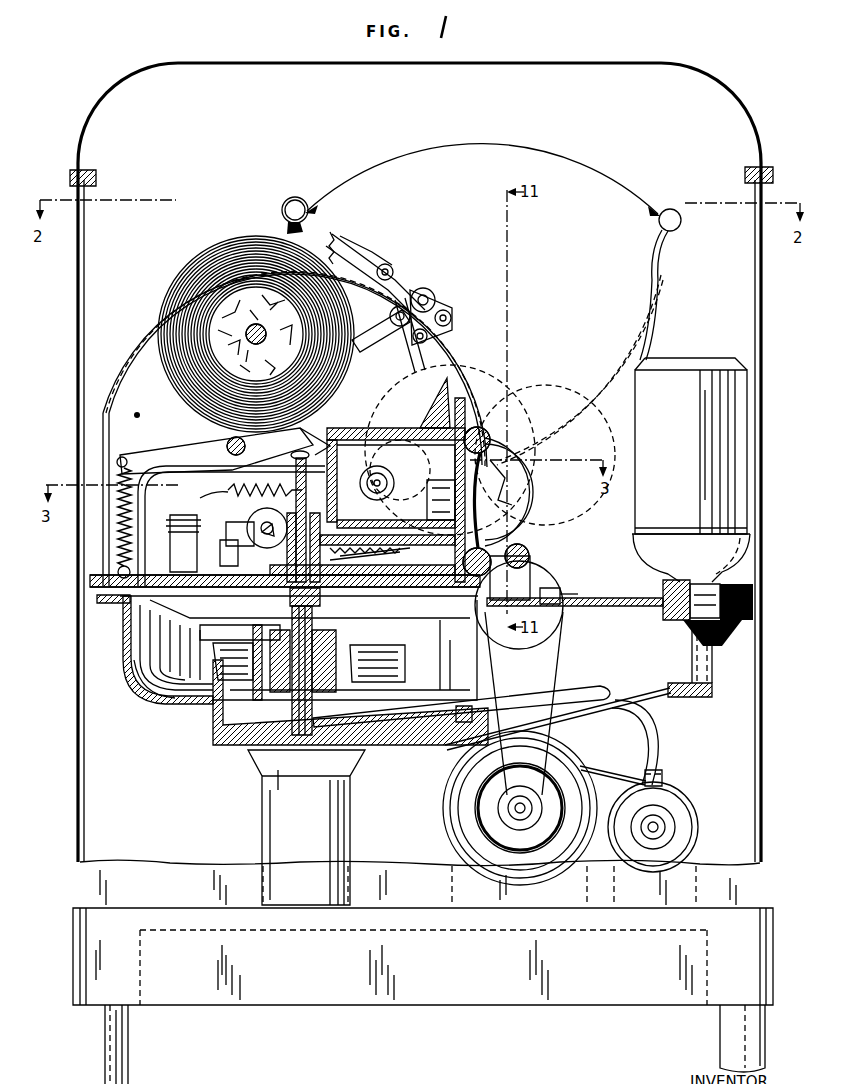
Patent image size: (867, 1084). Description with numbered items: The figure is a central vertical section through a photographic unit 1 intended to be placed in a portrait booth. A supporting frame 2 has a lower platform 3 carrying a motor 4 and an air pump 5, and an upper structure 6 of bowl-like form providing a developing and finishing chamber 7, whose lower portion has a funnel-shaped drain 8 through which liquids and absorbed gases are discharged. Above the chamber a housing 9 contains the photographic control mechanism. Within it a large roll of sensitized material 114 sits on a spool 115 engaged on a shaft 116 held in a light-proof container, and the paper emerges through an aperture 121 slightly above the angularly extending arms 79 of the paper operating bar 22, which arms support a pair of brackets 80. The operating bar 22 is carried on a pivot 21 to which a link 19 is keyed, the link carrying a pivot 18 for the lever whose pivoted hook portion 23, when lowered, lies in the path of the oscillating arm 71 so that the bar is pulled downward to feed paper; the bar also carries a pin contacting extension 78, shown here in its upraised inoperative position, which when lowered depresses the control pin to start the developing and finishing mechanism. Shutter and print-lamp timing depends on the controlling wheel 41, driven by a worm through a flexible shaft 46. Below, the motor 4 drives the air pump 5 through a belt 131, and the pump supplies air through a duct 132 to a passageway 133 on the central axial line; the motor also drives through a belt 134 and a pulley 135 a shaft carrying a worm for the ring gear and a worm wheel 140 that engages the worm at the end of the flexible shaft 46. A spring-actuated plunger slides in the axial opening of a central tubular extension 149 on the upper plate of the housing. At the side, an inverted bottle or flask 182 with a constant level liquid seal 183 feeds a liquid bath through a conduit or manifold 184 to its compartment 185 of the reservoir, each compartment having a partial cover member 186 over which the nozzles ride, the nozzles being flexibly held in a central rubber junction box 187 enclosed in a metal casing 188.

The unit 1 is at (78, 96).
The supporting frame 2 is at (130, 1064).
The lower platform 3 is at (192, 905).
The motor 4 is at (445, 826).
The air pump 5 is at (700, 830).
The upper structure 6 is at (124, 633).
The developing and finishing chamber 7 is at (155, 675).
The funnel-shaped drain 8 is at (342, 768).
The housing 9 is at (126, 326).
The pivot 18 is at (249, 486).
The link 19 is at (292, 456).
The pivot 21 is at (170, 445).
The paper operating bar 22 is at (144, 428).
The pivoted hook portion 23 is at (190, 510).
The controlling wheel 41 is at (210, 512).
The flexible shaft 46 is at (442, 578).
The oscillating arm 71 is at (197, 536).
The pin contacting extension 78 is at (388, 404).
The angularly extending arms 79 is at (392, 312).
The brackets 80 is at (448, 318).
The roll of sensitized material 114 is at (190, 280).
The spool 115 is at (232, 300).
The shaft 116 is at (238, 348).
The aperture 121 is at (372, 300).
The belt 131 is at (596, 776).
The duct 132 is at (572, 694).
The passageway 133 is at (222, 730).
The belt 134 is at (565, 652).
The pulley 135 is at (575, 596).
The worm wheel 140 is at (525, 548).
The central tubular extension 149 is at (322, 598).
The inverted bottle or flask 182 is at (668, 382).
The constant level liquid seal 183 is at (666, 598).
The conduit or manifold 184 is at (668, 686).
The compartment 185 is at (212, 656).
The partial cover member 186 is at (215, 636).
The central rubber junction box 187 is at (336, 632).
The metal casing 188 is at (268, 632).